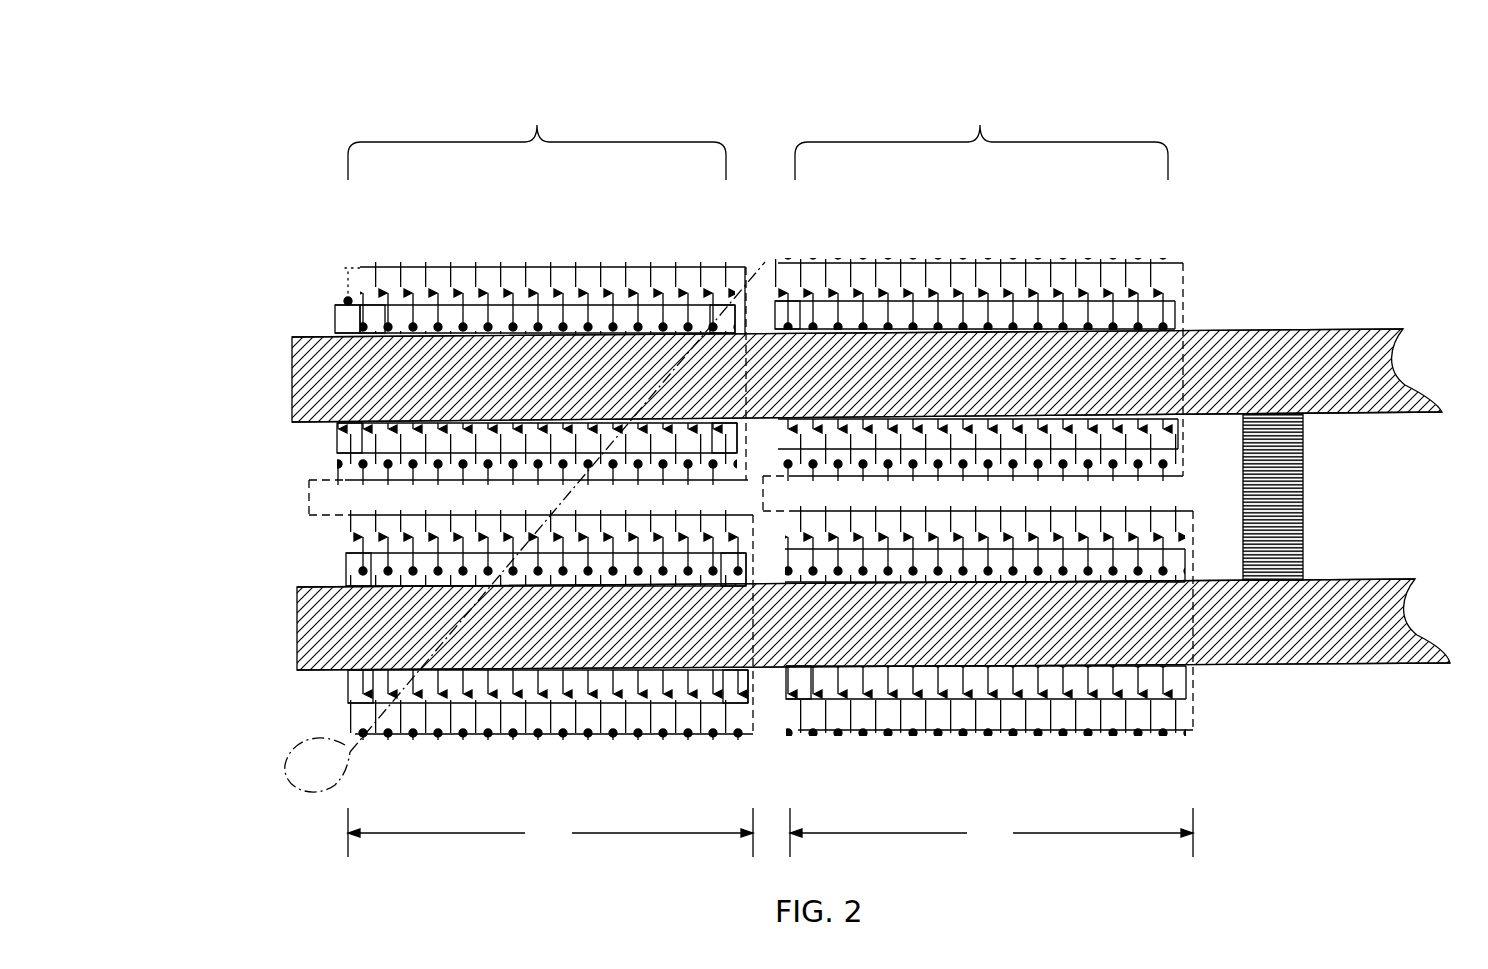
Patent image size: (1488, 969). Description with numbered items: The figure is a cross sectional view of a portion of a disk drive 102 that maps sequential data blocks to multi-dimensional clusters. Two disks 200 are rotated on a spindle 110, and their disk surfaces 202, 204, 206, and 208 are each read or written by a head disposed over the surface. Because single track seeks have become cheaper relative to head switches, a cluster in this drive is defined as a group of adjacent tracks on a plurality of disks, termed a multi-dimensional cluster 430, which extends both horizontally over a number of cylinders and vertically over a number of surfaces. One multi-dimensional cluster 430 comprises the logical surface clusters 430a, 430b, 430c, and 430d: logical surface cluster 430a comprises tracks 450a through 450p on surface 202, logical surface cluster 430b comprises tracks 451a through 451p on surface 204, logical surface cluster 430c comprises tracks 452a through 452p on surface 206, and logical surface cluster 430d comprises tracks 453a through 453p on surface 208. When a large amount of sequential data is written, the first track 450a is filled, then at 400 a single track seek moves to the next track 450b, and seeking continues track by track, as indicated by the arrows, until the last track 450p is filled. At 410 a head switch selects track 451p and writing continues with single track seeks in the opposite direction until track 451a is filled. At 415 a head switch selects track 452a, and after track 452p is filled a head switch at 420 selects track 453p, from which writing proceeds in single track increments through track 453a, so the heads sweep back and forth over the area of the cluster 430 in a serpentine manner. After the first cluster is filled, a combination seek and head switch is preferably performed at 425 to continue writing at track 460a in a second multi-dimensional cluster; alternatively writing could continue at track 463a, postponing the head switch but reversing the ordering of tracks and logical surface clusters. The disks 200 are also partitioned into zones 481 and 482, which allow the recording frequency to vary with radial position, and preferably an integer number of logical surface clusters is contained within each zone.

The disk drive 102 is at (1232, 87).
The spindle 110 is at (1303, 484).
The disks 200 is at (1400, 364).
The disk surface 202 is at (1312, 330).
The disk surface 204 is at (1408, 414).
The disk surface 206 is at (1331, 579).
The disk surface 208 is at (1386, 666).
The single track seek 400 is at (345, 268).
The head switch 410 is at (756, 263).
The head switch 415 is at (309, 500).
The head switch 420 is at (757, 710).
The combination seek and head switch 425 is at (345, 760).
The multi-dimensional cluster 430 is at (758, 139).
The logical surface cluster 430a is at (664, 300).
The logical surface cluster 430b is at (662, 352).
The logical surface cluster 430c is at (669, 645).
The logical surface cluster 430d is at (669, 722).
The first track 450a is at (340, 318).
The track 450b is at (628, 235).
The last track 450p is at (715, 316).
The track 451a is at (310, 444).
The track 451p is at (757, 436).
The track 452a is at (350, 568).
The track 452p is at (738, 572).
The track 453a is at (350, 690).
The track 453p is at (737, 690).
The track 460a is at (790, 312).
The track 463a is at (805, 684).
The zone 481 is at (550, 832).
The zone 482 is at (991, 832).